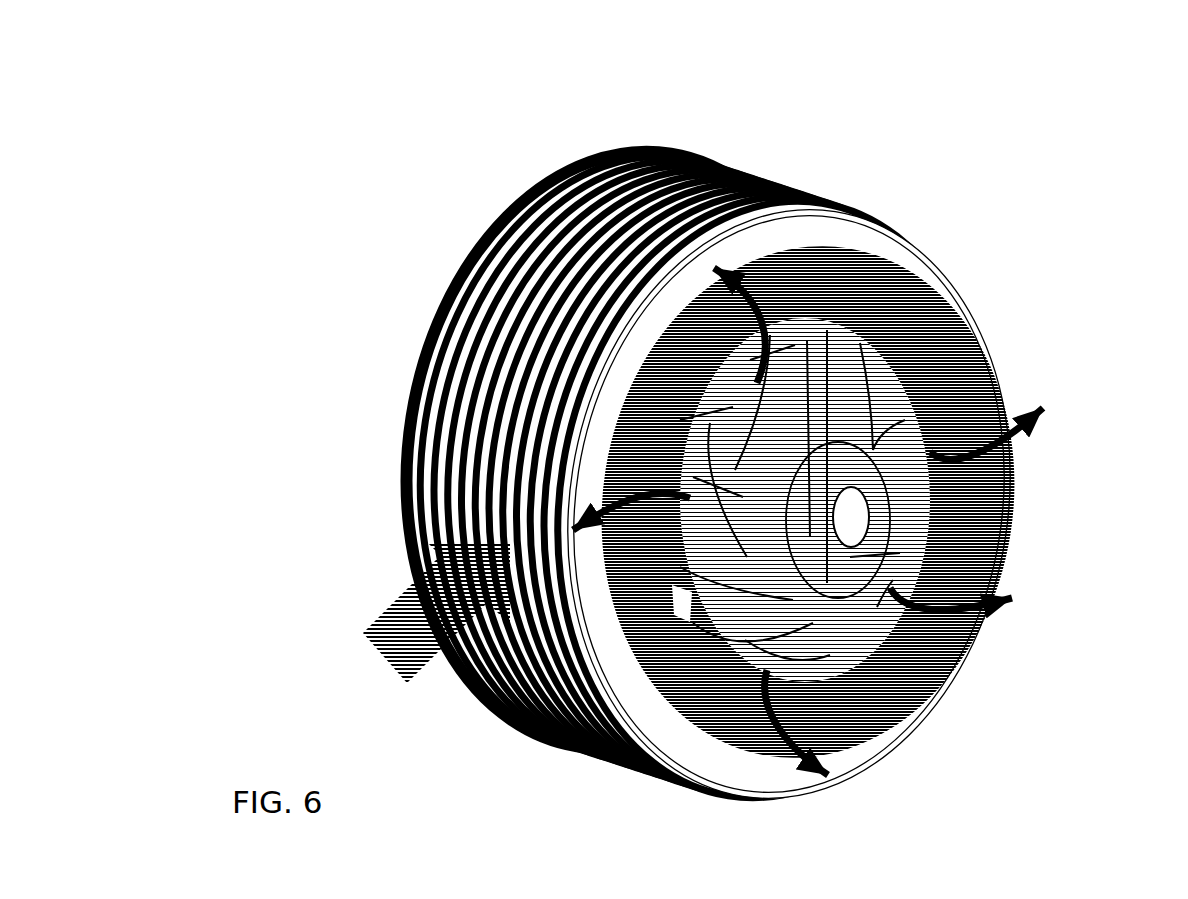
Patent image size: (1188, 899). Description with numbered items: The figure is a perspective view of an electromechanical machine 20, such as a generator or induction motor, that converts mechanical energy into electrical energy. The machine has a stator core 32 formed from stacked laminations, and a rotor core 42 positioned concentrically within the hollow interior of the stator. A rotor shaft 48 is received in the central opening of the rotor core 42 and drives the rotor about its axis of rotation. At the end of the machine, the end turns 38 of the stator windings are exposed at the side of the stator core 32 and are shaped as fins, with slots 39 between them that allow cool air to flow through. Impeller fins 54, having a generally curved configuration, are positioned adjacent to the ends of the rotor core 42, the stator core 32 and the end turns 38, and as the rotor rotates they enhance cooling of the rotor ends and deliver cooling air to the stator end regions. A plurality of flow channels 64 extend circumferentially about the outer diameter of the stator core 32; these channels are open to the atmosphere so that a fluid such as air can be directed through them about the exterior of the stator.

The electromechanical machine 20 is at (1043, 93).
The stator core 32 is at (748, 258).
The end turns 38 is at (795, 290).
The slots 39 is at (880, 645).
The rotor core 42 is at (815, 455).
The rotor shaft 48 is at (850, 520).
The impeller fins 54 is at (858, 378).
The flow channels 64 is at (548, 302).